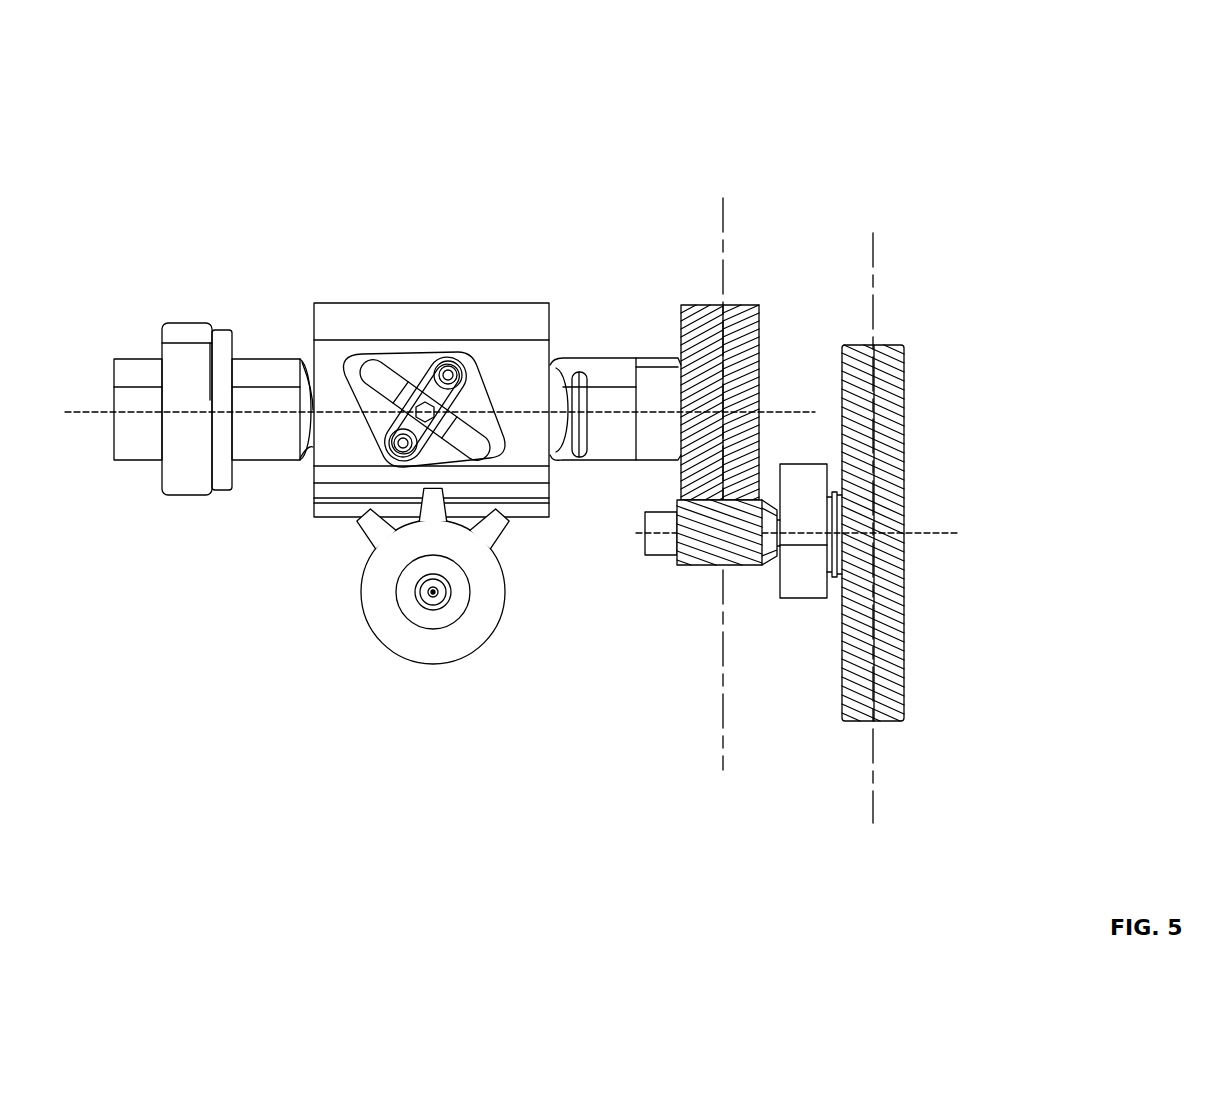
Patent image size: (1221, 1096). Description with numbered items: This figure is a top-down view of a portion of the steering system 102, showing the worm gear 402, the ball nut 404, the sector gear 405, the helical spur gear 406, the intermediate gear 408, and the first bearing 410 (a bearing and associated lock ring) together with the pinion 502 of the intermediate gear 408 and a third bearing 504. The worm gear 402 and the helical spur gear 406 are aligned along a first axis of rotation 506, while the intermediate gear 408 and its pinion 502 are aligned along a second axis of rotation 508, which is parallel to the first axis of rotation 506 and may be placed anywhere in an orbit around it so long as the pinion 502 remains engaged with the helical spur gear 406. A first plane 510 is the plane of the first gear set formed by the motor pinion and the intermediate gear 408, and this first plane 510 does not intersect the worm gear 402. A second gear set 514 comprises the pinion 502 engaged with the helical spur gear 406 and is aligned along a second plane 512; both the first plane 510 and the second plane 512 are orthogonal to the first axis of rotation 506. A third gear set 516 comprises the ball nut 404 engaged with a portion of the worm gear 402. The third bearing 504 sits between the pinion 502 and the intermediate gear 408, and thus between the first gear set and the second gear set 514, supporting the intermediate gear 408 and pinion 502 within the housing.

The steering system 102 is at (1013, 49).
The worm gear 402 is at (143, 462).
The ball nut 404 is at (437, 303).
The sector gear 405 is at (505, 580).
The helical spur gear 406 is at (740, 305).
The intermediate gear 408 is at (893, 345).
The first bearing 410 is at (178, 326).
The pinion of the intermediate gear 502 is at (690, 566).
The third bearing 504 is at (810, 600).
The first axis of rotation 506 is at (92, 414).
The second axis of rotation 508 is at (918, 532).
The first plane 510 is at (875, 272).
The second plane 512 is at (725, 216).
The second gear set 514 is at (712, 581).
The third gear set 516 is at (336, 526).